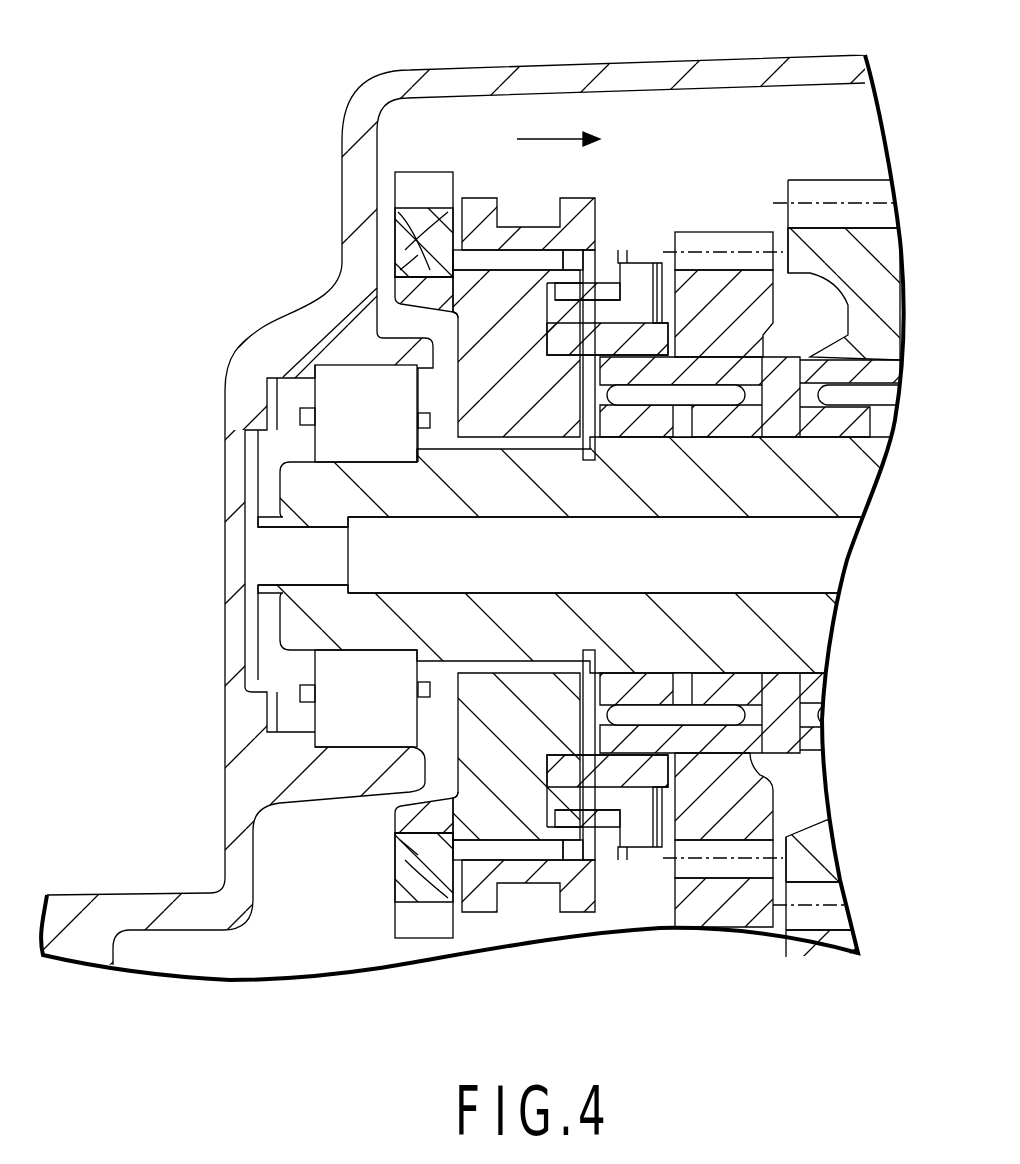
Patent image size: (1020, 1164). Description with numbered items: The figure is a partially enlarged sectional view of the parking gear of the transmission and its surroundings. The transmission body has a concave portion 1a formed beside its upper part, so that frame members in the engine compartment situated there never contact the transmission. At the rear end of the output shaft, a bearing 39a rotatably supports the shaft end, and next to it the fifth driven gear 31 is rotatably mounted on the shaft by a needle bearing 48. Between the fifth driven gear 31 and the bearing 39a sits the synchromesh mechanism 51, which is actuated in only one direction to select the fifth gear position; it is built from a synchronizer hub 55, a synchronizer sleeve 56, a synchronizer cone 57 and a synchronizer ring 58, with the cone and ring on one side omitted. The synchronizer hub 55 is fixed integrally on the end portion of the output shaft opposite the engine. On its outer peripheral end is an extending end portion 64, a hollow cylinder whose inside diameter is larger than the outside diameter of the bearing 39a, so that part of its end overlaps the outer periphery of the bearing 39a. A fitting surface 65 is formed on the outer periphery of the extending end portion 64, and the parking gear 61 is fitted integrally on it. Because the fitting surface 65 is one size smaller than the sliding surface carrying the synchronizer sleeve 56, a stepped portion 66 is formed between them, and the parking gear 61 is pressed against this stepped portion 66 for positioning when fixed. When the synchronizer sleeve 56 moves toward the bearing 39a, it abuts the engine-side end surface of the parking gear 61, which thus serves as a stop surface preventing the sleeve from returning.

The concave portion 1a is at (250, 336).
The synchromesh mechanism 51 is at (515, 118).
The parking gear 61 is at (425, 208).
The stepped portion 66 is at (405, 218).
The fitting surface 65 is at (410, 243).
The extending end portion 64 is at (407, 286).
The synchronizer sleeve 56 is at (582, 200).
The synchronizer ring 58 is at (607, 270).
The synchronizer cone 57 is at (650, 290).
The fifth driven gear 31 is at (747, 233).
The bearing 39a is at (333, 438).
The synchronizer hub 55 is at (535, 425).
The needle bearing 48 is at (722, 395).